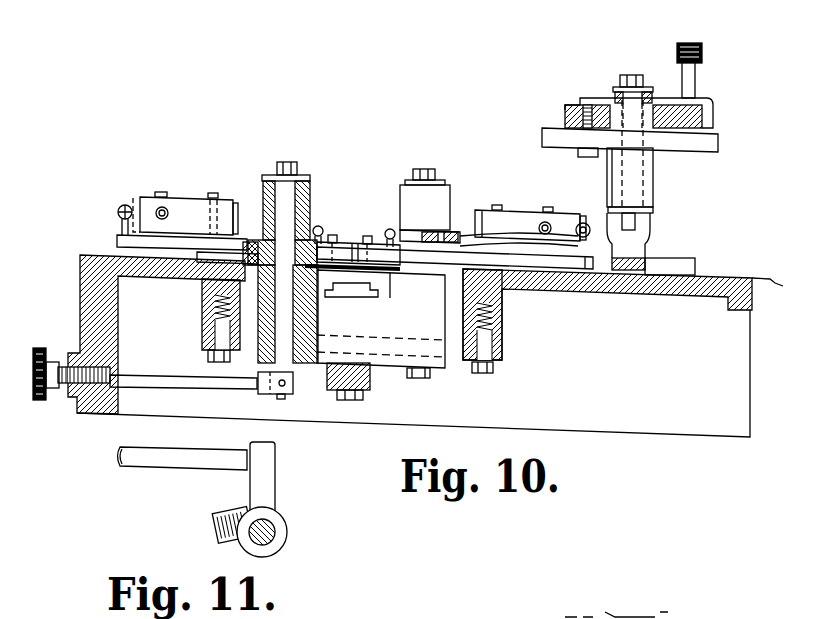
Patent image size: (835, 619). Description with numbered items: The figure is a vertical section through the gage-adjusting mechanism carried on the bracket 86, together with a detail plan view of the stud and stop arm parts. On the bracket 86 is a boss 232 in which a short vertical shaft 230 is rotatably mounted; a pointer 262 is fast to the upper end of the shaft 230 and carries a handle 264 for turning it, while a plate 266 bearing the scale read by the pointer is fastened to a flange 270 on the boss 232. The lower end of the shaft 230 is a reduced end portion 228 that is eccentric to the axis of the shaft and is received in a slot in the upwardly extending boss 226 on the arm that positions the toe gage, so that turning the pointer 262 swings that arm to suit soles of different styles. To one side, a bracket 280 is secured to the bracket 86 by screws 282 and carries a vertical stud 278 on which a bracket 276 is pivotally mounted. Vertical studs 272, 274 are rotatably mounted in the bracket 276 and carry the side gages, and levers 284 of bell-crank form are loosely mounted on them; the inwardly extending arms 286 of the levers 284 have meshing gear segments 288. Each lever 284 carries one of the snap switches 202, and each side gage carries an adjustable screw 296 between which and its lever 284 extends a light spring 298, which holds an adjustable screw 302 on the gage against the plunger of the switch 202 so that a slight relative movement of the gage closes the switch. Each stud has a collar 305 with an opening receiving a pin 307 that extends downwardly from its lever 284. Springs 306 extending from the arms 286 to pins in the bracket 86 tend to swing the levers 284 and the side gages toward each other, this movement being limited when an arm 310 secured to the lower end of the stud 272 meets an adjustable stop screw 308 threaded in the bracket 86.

In FIG. 10, the bracket 86 is at (97, 284).
In FIG. 10, the snap switch 202 is at (185, 210).
In FIG. 10, the boss 226 is at (652, 220).
In FIG. 10, the reduced end portion 228 is at (636, 223).
In FIG. 11, the reduced end portion 228 is at (325, 601).
In FIG. 10, the short vertical shaft 230 is at (645, 182).
In FIG. 10, the boss 232 is at (653, 160).
In FIG. 10, the pointer 262 is at (590, 97).
In FIG. 10, the handle 264 is at (694, 56).
In FIG. 10, the plate 266 is at (565, 106).
In FIG. 10, the flange 270 is at (710, 138).
In FIG. 10, the vertical stud 272 is at (285, 192).
In FIG. 11, the vertical stud 272 is at (272, 529).
In FIG. 10, the vertical stud 274 is at (430, 170).
In FIG. 10, the bracket 276 is at (390, 370).
In FIG. 10, the vertical stud 278 is at (343, 270).
In FIG. 10, the bracket 280 is at (503, 340).
In FIG. 10, the screws 282 is at (208, 357).
In FIG. 10, the lever 284 is at (247, 240).
In FIG. 10, the inwardly extending arm 286 is at (327, 243).
In FIG. 10, the gear segment 288 is at (358, 250).
In FIG. 10, the adjustable screw 296 is at (588, 226).
In FIG. 10, the light spring 298 is at (118, 209).
In FIG. 10, the adjustable screw 302 is at (551, 226).
In FIG. 10, the collar 305 is at (258, 279).
In FIG. 10, the spring 306 is at (319, 226).
In FIG. 10, the pin 307 is at (200, 262).
In FIG. 10, the adjustable stop screw 308 is at (47, 331).
In FIG. 11, the adjustable stop screw 308 is at (133, 462).
In FIG. 10, the arm 310 is at (266, 392).
In FIG. 11, the arm 310 is at (270, 473).